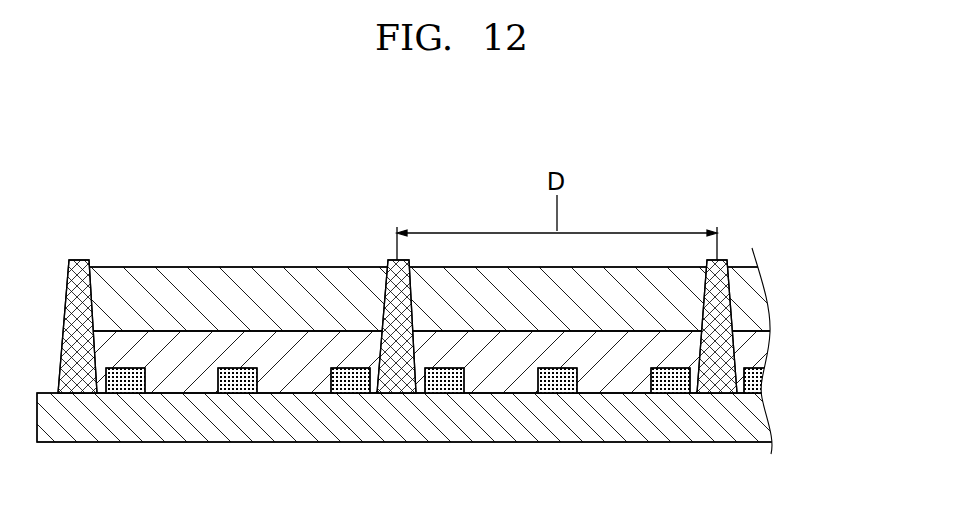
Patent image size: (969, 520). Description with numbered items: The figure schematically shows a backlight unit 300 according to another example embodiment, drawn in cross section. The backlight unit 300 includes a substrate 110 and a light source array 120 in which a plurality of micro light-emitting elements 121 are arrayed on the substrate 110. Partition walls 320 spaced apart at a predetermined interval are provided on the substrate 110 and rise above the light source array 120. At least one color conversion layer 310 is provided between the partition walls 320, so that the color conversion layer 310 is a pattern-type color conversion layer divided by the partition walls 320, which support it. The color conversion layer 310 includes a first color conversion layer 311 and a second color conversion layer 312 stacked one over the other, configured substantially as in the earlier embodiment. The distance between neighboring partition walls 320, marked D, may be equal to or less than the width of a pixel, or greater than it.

The substrate 110 is at (401, 432).
The light source array 120 is at (444, 438).
The micro light-emitting element 121 is at (237, 394).
The backlight unit 300 is at (448, 318).
The color conversion layer 310 is at (451, 275).
The first color conversion layer 311 is at (297, 203).
The second color conversion layer 312 is at (285, 272).
The partition wall 320 is at (80, 258).